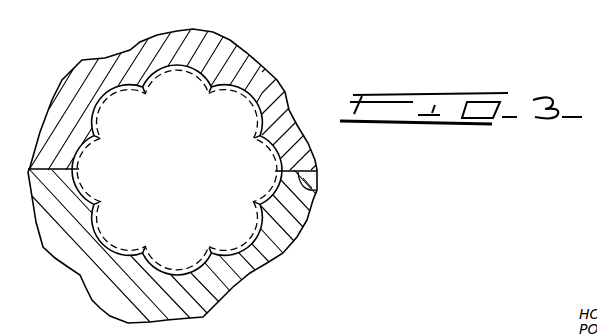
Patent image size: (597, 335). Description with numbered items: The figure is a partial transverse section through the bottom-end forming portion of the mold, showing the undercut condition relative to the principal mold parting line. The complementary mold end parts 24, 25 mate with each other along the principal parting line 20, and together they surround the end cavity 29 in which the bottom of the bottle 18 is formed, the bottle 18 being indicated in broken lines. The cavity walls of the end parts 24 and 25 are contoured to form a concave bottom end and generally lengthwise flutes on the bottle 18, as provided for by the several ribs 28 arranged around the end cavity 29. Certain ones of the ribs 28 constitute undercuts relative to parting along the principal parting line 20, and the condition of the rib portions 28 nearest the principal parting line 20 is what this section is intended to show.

The bottle 18 is at (275, 146).
The principal parting line 20 is at (315, 190).
The mold end part 24 is at (247, 63).
The mold end part 25 is at (287, 226).
The ribs 28 is at (146, 87).
The end cavity 29 is at (233, 161).